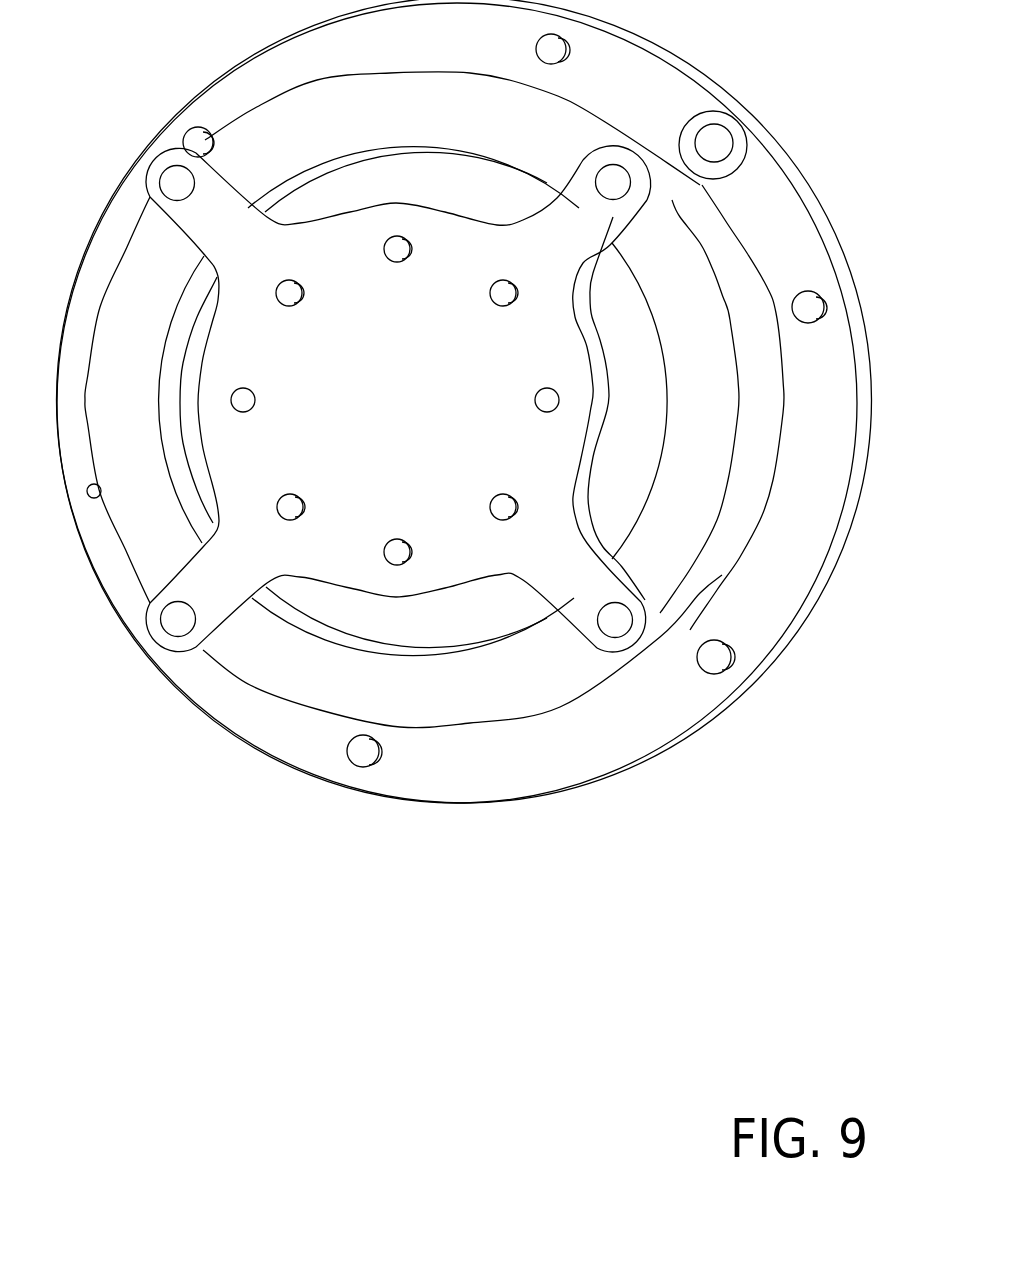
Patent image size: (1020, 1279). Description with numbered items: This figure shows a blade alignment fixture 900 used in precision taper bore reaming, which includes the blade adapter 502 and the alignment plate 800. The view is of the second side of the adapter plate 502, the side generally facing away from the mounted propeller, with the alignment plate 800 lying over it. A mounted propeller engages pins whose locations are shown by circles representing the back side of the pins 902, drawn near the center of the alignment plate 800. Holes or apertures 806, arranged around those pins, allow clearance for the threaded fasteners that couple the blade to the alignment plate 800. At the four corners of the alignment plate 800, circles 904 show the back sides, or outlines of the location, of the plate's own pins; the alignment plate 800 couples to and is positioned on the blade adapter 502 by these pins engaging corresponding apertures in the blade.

The blade alignment fixture 900 is at (464, 463).
The blade adapter 502 is at (434, 400).
The alignment plate 800 is at (398, 399).
The circles 904 is at (177, 182).
The back side of the pins 902 is at (395, 403).
The holes or apertures 806 is at (493, 300).